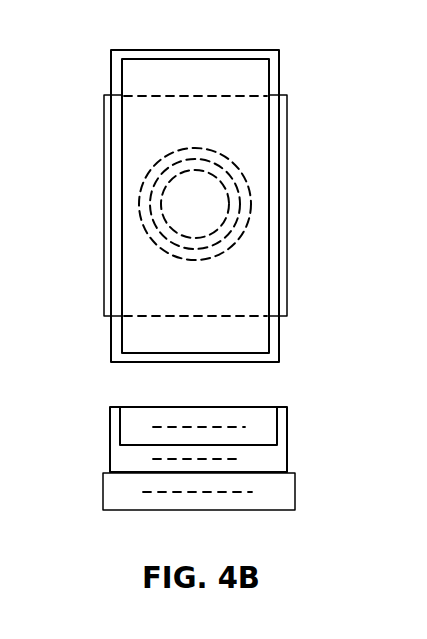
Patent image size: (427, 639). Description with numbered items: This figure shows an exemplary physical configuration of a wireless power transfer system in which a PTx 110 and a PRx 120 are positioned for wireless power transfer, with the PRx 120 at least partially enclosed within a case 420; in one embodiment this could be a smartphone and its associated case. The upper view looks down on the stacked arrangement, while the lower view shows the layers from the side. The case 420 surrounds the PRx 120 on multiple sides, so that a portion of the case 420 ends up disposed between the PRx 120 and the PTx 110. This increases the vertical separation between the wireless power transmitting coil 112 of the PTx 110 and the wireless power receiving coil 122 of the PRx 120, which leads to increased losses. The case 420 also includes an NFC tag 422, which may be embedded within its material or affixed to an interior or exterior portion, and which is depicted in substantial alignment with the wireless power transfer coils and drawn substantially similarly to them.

The PTx 110 is at (110, 95).
The wireless power transmitting coil 112 is at (207, 150).
The PRx 120 is at (148, 59).
The wireless power receiving coil 122 is at (183, 252).
The case 420 is at (267, 50).
The NFC tag 422 is at (195, 182).